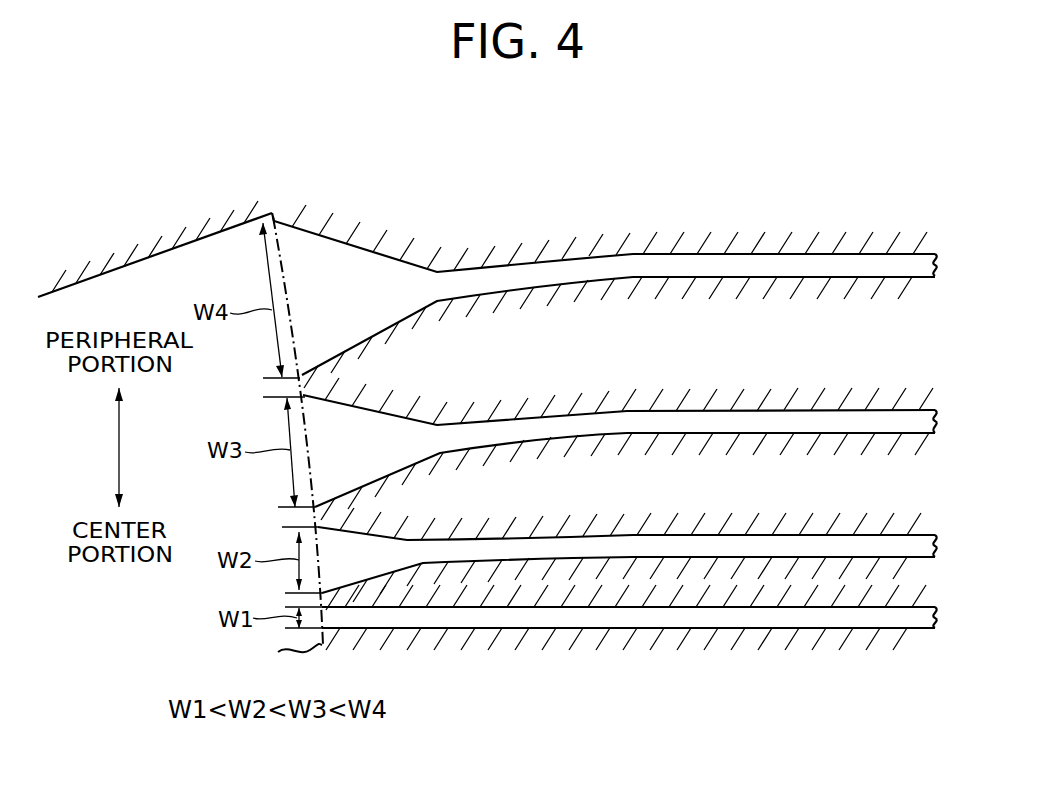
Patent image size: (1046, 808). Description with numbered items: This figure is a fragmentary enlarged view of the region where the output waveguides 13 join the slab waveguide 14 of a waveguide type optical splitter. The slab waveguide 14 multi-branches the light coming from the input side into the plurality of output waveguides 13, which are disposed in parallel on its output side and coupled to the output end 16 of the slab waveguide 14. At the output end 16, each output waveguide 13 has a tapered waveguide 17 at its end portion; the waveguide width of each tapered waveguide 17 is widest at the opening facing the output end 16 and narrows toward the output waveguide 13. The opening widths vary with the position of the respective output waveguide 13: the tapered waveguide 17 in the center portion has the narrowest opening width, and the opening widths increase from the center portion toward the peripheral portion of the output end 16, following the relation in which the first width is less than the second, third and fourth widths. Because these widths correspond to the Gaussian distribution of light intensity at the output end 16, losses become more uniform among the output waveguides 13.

The output waveguide 13 is at (713, 252).
The slab waveguide 14 is at (113, 267).
The output end 16 is at (282, 258).
The tapered waveguide 17 is at (383, 250).